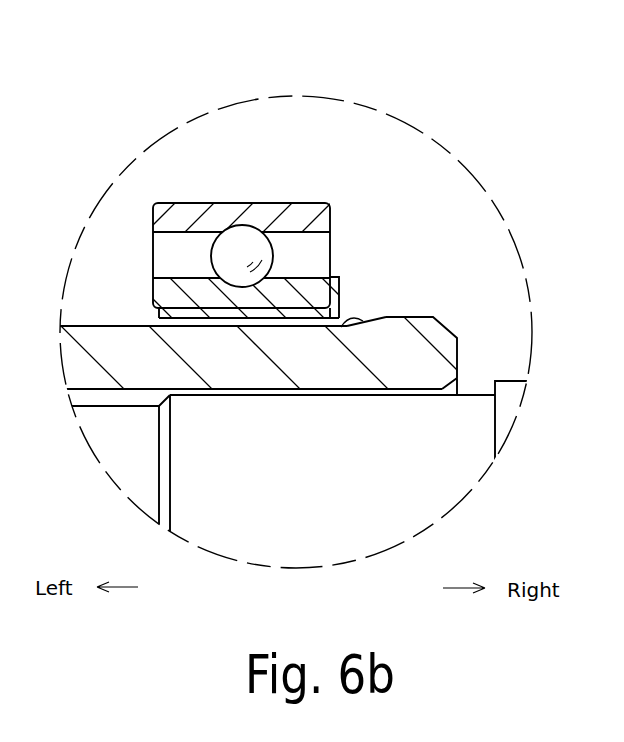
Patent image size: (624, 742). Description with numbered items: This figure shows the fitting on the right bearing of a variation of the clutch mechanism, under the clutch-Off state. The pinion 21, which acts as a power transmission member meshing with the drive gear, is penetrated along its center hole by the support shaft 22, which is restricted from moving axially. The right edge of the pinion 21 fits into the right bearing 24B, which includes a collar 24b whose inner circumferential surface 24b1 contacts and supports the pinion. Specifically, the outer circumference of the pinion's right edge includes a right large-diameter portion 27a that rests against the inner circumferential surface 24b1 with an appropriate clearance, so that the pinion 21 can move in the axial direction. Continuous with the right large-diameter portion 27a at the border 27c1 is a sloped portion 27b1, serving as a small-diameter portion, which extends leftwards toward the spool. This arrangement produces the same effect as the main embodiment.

The pinion 21 is at (112, 326).
The support shaft 22 is at (472, 412).
The right bearing 24B is at (253, 284).
The collar 24b is at (334, 276).
The inner circumferential surface 24b1 is at (217, 320).
The right large-diameter portion 27a is at (426, 317).
The sloped portion 27b1 is at (345, 328).
The border 27c1 is at (388, 317).